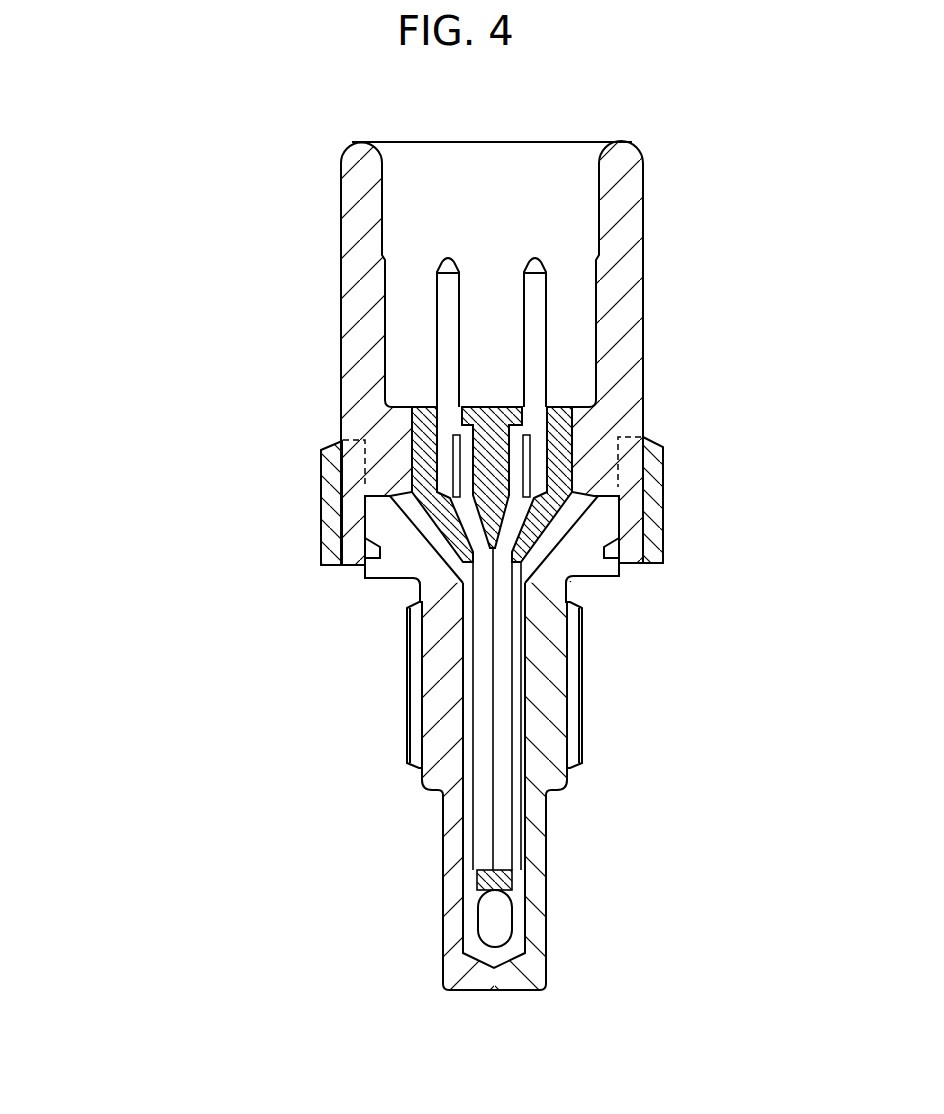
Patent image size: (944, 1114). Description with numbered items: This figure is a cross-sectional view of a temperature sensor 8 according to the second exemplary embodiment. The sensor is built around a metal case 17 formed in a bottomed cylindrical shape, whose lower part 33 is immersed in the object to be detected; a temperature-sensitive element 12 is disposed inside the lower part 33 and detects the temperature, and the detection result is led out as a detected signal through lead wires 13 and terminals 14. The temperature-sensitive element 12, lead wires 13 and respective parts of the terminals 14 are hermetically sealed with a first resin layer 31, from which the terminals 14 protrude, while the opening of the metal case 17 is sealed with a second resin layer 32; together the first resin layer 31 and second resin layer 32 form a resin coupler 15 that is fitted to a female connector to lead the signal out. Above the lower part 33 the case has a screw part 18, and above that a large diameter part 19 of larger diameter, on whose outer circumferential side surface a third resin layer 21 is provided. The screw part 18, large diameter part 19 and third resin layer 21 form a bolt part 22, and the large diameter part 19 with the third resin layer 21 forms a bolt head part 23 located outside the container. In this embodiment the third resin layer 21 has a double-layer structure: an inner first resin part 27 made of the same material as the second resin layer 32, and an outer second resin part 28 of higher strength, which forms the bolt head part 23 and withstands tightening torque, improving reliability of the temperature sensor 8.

The temperature sensor 8 is at (268, 232).
The temperature-sensitive element 12 is at (497, 907).
The lead wires 13 is at (498, 852).
The terminals 14 is at (533, 338).
The resin coupler 15 is at (759, 353).
The metal case 17 is at (543, 723).
The screw part 18 is at (361, 775).
The large diameter part 19 is at (388, 566).
The third resin layer 21 is at (208, 452).
The bolt part 22 is at (97, 547).
The bolt head part 23 is at (155, 473).
The first resin part 27 is at (352, 529).
The second resin part 28 is at (323, 473).
The first resin layer 31 is at (575, 465).
The second resin layer 32 is at (627, 397).
The lower part 33 is at (364, 990).